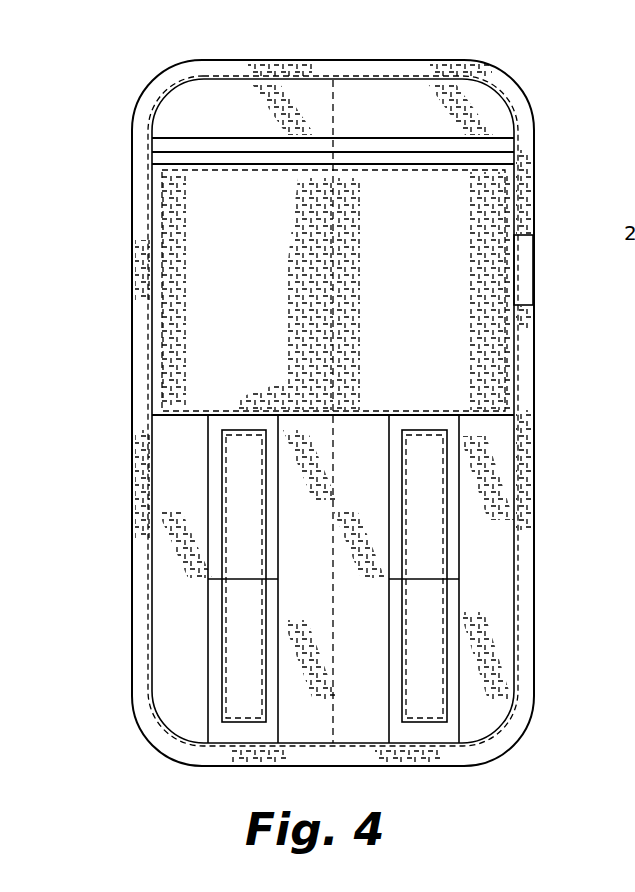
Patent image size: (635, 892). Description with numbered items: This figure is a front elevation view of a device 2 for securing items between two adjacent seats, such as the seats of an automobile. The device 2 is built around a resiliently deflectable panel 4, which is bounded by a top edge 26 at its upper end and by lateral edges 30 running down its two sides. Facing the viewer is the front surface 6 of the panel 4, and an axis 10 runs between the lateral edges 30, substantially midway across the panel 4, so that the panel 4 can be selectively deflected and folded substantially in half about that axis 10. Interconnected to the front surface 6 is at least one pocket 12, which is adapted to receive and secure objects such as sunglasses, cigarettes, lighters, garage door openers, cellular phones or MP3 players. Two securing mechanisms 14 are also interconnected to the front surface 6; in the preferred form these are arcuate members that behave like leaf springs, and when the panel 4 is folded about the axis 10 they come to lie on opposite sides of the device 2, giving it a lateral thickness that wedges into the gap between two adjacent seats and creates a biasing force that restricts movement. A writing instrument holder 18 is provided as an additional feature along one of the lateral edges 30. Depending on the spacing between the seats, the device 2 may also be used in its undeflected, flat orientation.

The device 2 is at (354, 384).
The resiliently deflectable panel 4 is at (373, 505).
The front surface 6 is at (482, 112).
The axis 10 is at (333, 724).
The pocket 12 is at (207, 239).
The securing mechanism 14 is at (423, 546).
The writing instrument holder 18 is at (522, 278).
The top edge 26 is at (317, 59).
The lateral edges 30 is at (133, 295).